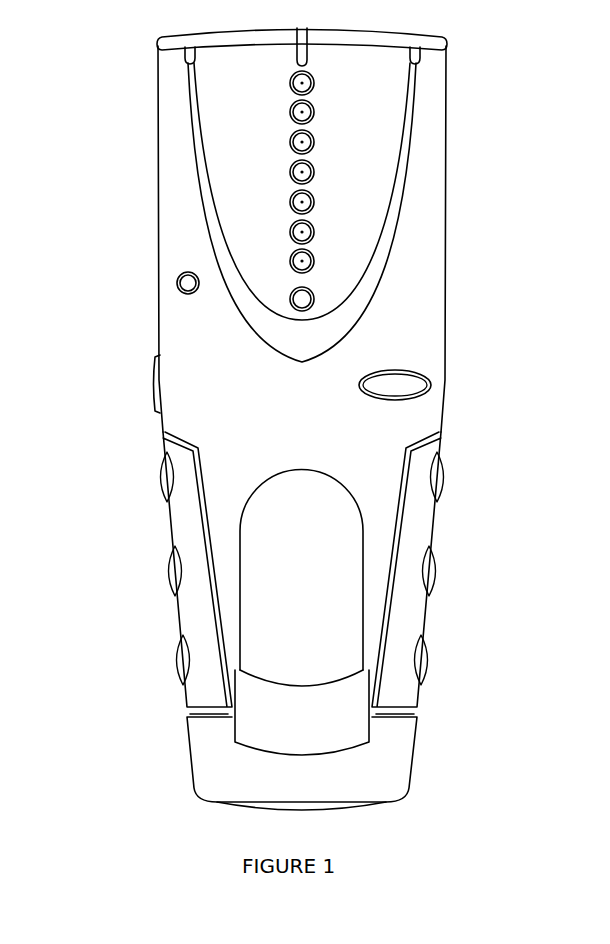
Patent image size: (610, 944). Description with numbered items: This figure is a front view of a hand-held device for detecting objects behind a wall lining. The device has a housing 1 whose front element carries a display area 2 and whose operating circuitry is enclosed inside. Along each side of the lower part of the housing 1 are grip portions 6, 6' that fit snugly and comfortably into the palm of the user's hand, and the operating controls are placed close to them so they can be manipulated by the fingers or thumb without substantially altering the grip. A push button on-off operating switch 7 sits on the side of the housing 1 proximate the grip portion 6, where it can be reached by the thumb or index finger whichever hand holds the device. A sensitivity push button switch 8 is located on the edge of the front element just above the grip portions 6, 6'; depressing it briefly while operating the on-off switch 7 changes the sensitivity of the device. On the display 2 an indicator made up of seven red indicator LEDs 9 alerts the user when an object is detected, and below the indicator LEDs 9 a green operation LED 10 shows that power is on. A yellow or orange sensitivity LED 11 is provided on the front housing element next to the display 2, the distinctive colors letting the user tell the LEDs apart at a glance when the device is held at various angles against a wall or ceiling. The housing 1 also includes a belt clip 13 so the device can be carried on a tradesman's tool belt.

The housing 1 is at (333, 431).
The display area 2 is at (235, 99).
The grip portion 6 is at (158, 573).
The grip portion 6' is at (456, 573).
The push button on-off operating switch 7 is at (150, 388).
The sensitivity push button switch 8 is at (407, 388).
The indicator light emitting diodes 9 is at (323, 260).
The operation LED 10 is at (307, 298).
The sensitivity LED 11 is at (180, 276).
The belt clip 13 is at (293, 520).